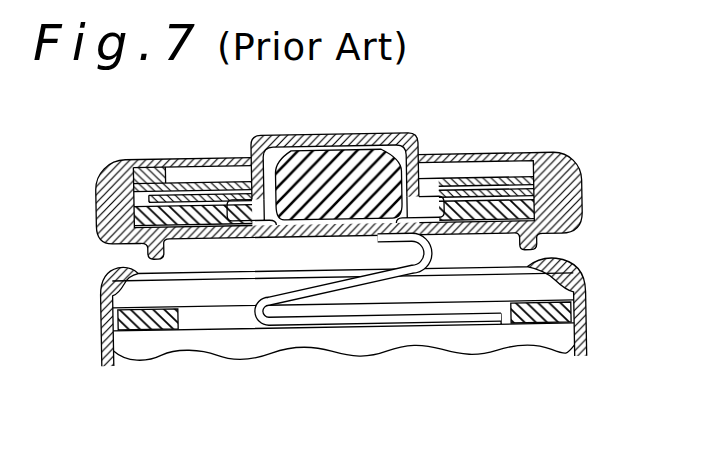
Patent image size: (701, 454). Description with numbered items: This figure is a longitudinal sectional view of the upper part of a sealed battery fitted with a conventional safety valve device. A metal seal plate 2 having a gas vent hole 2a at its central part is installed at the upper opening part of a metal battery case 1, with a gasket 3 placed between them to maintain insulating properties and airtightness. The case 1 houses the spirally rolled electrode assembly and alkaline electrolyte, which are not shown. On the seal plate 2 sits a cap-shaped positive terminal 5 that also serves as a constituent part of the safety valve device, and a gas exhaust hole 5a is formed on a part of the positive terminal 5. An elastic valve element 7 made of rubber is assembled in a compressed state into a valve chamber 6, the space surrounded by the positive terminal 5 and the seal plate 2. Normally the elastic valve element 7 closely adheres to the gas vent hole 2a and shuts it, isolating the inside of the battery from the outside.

The battery case 1 is at (585, 330).
The seal plate 2 is at (482, 156).
The gas vent hole 2a is at (350, 236).
The gasket 3 is at (583, 212).
The positive terminal 5 is at (321, 137).
The gas exhaust hole 5a is at (240, 157).
The valve chamber 6 is at (274, 134).
The elastic valve element 7 is at (394, 150).